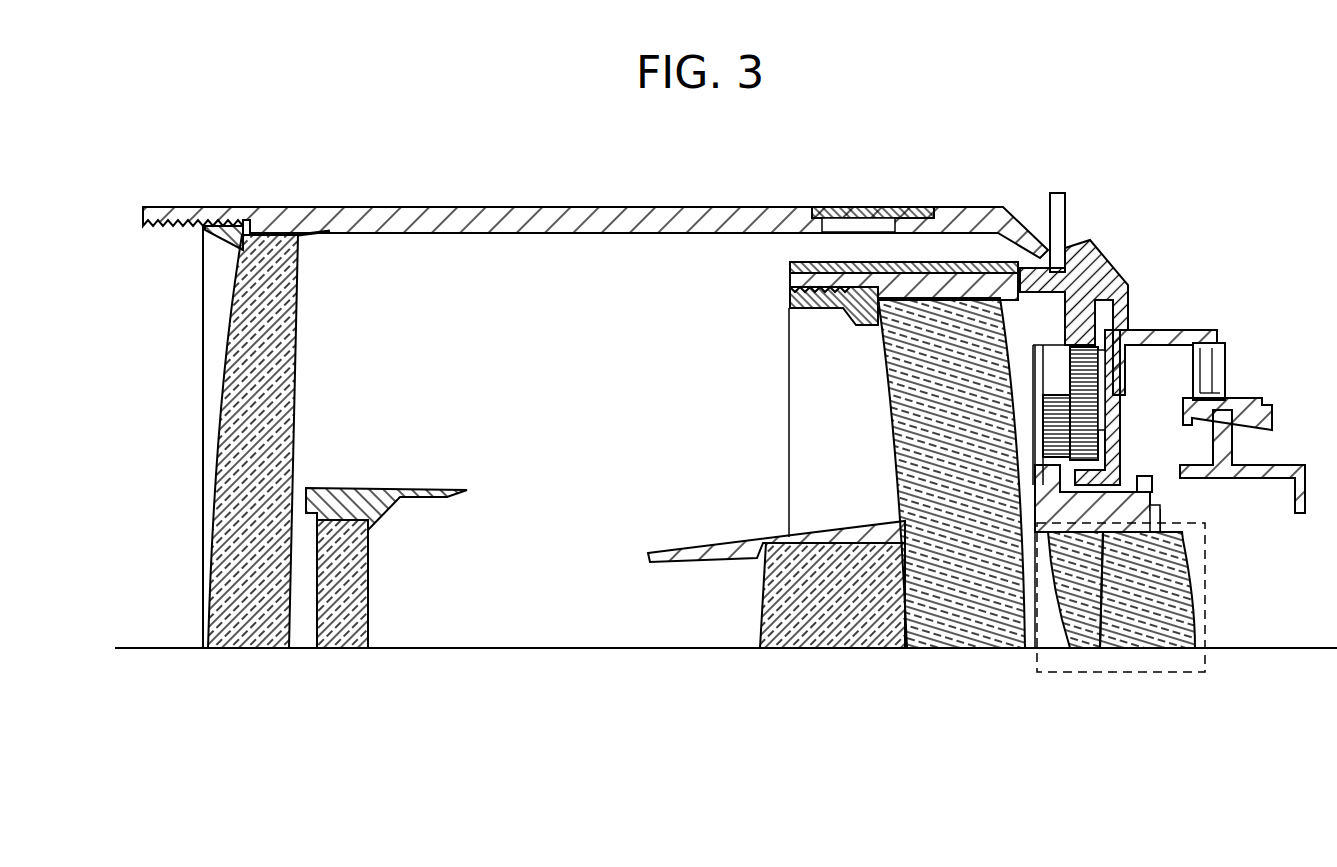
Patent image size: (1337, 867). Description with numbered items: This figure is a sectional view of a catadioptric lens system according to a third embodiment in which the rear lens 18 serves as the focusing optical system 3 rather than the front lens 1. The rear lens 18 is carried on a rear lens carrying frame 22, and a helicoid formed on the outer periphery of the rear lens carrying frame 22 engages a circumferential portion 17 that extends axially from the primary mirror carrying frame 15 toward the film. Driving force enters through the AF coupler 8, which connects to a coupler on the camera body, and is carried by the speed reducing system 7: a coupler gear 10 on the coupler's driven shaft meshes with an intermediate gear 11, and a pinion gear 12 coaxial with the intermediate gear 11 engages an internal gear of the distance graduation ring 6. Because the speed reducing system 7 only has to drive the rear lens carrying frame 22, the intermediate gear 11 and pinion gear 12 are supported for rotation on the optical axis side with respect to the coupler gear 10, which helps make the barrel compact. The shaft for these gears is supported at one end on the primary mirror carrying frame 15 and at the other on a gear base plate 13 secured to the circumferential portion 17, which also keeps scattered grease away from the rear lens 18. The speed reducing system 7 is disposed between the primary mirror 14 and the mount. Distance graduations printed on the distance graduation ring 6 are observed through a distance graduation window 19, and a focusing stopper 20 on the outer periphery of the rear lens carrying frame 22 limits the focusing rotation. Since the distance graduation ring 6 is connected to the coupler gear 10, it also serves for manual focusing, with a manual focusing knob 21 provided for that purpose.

The front lens 1 is at (268, 248).
The focusing optical system 3 is at (1155, 672).
The distance graduation ring 6 is at (798, 262).
The speed reducing system 7 is at (1130, 280).
The AF coupler 8 is at (1222, 372).
The coupler gear 10 is at (1095, 330).
The intermediate gear 11 is at (1190, 330).
The pinion gear 12 is at (1272, 410).
The gear base plate 13 is at (1110, 370).
The primary mirror 14 is at (1028, 627).
The primary mirror carrying frame 15 is at (800, 288).
The circumferential portion 17 is at (1100, 480).
The rear lens 18 is at (1193, 627).
The distance graduation window 19 is at (924, 210).
The focusing stopper 20 is at (1152, 478).
The manual focusing knob 21 is at (1062, 210).
The rear lens carrying frame 22 is at (1155, 508).